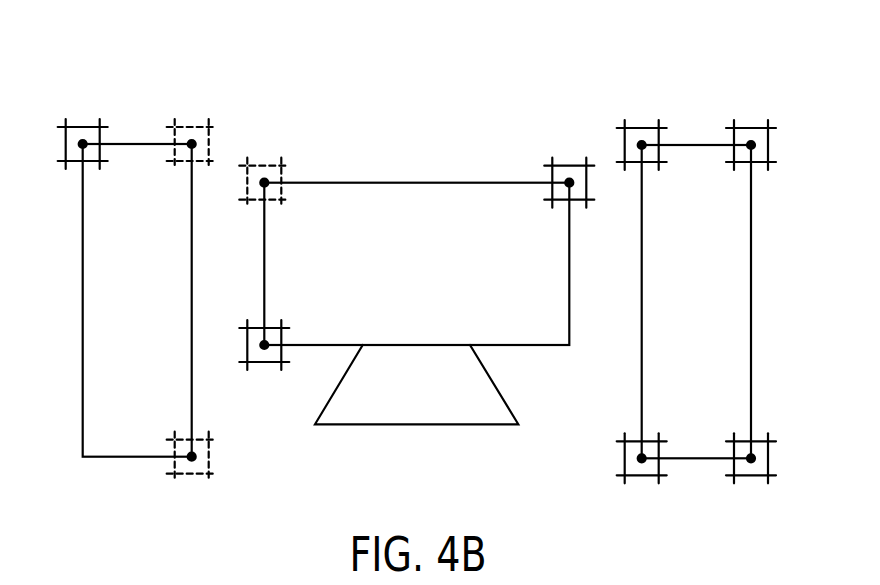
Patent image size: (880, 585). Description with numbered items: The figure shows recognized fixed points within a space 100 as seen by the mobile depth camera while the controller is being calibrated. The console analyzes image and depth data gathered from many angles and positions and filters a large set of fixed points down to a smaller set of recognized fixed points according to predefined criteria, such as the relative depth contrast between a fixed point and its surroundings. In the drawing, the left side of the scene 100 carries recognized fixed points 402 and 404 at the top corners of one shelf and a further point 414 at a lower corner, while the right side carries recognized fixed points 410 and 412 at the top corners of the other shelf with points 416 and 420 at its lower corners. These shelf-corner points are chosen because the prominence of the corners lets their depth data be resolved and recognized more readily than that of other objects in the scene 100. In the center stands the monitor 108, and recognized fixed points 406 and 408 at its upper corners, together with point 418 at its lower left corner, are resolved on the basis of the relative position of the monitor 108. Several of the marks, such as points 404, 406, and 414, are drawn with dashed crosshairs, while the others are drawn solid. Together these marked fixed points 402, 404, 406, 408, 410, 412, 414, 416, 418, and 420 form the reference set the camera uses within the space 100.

The space 100 is at (416, 222).
The monitor 108 is at (450, 183).
The recognized fixed point 402 is at (83, 144).
The recognized fixed point 404 is at (192, 144).
The recognized fixed point 406 is at (264, 183).
The recognized fixed point 408 is at (569, 183).
The recognized fixed point 410 is at (642, 145).
The recognized fixed point 412 is at (751, 145).
The seventh marker position 414 is at (192, 457).
The eighth marker position 416 is at (642, 458).
The recognized fixed point 418 is at (264, 345).
The recognized fixed point 420 is at (751, 458).